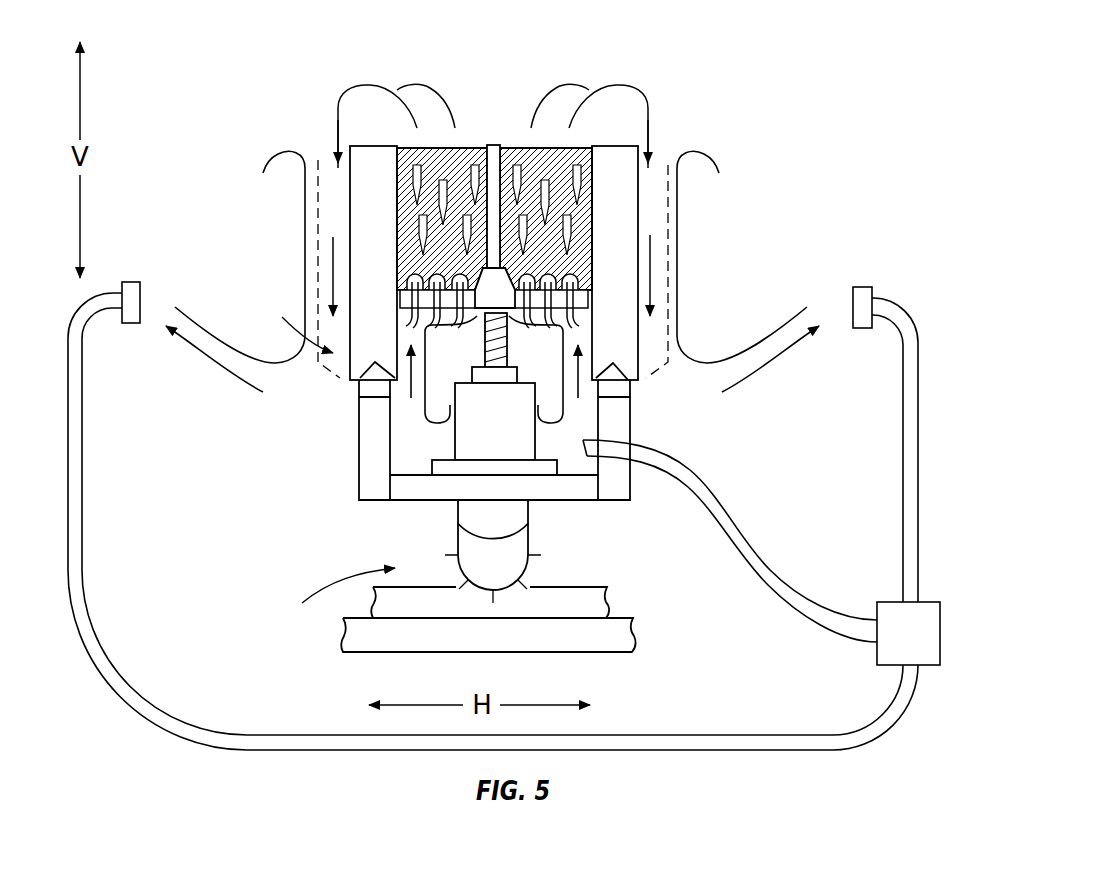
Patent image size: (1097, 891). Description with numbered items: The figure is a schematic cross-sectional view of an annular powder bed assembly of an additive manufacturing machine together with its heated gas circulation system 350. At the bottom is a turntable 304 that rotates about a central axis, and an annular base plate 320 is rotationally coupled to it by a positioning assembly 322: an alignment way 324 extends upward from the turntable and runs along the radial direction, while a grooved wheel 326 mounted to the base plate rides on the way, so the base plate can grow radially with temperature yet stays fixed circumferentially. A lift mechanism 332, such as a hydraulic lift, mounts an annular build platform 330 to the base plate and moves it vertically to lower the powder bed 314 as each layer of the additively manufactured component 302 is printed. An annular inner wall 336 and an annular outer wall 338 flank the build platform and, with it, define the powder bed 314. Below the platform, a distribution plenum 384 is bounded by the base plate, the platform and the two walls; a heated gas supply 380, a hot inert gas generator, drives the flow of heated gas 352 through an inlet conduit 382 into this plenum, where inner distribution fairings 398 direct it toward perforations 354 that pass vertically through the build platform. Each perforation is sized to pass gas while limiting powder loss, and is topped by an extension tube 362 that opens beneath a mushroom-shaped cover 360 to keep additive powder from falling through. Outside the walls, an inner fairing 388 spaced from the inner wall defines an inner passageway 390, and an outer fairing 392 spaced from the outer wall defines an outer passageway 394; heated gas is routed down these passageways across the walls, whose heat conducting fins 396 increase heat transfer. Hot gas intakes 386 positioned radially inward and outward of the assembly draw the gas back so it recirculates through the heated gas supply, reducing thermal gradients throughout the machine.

The additively manufactured component 302 is at (493, 145).
The turntable 304 is at (603, 637).
The powder bed 314 is at (463, 163).
The annular base plate 320 is at (563, 488).
The positioning assembly 322 is at (338, 603).
The alignment way 324 is at (592, 605).
The grooved wheel 326 is at (533, 572).
The annular build platform 330 is at (497, 297).
The lift mechanism 332 is at (494, 394).
The annular inner wall 336 is at (365, 160).
The annular outer wall 338 is at (613, 167).
The heated gas circulation system 350 is at (939, 551).
The flow of heated gas 352 is at (632, 88).
The perforation 354 is at (528, 297).
The mushroom-shaped cover 360 is at (592, 262).
The extension tube 362 is at (575, 299).
The heated gas supply 380 is at (908, 633).
The inlet conduit 382 is at (770, 562).
The distribution plenum 384 is at (403, 461).
The hot gas intake 386 is at (132, 325).
The inner fairing 388 is at (303, 207).
The inner passageway 390 is at (286, 326).
The outer fairing 392 is at (677, 210).
The outer passageway 394 is at (654, 212).
The heat conducting fin 396 is at (328, 161).
The inner distribution fairing 398 is at (425, 415).